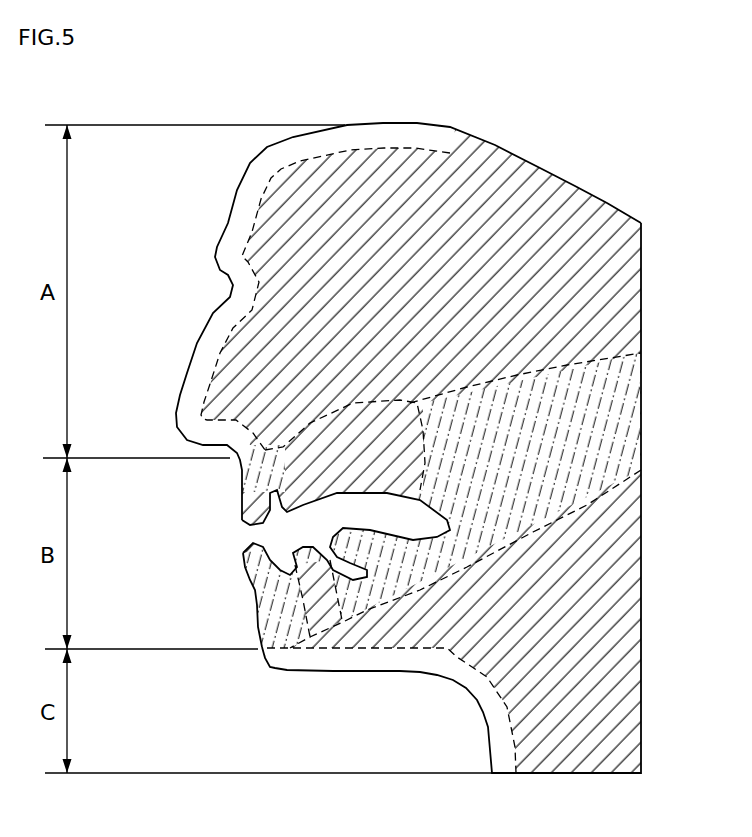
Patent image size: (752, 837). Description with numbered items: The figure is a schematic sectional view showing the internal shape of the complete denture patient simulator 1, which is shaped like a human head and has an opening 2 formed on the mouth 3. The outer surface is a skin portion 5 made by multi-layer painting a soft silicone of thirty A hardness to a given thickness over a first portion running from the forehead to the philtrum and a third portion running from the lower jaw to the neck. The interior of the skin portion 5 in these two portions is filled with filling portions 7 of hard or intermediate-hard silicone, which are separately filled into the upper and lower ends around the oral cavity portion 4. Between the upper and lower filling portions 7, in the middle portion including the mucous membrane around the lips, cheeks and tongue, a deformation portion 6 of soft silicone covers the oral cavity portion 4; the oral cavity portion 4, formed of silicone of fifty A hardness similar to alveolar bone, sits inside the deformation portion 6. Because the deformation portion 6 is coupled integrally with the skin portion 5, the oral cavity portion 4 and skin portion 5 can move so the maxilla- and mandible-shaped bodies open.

The complete denture patient simulator 1 is at (197, 365).
The opening 2 is at (240, 530).
The mouth 3 is at (248, 556).
The oral cavity portion 4 is at (310, 483).
The skin portion 5 is at (243, 228).
The deformation portion 6 is at (615, 416).
The filling portions 7 is at (489, 175).